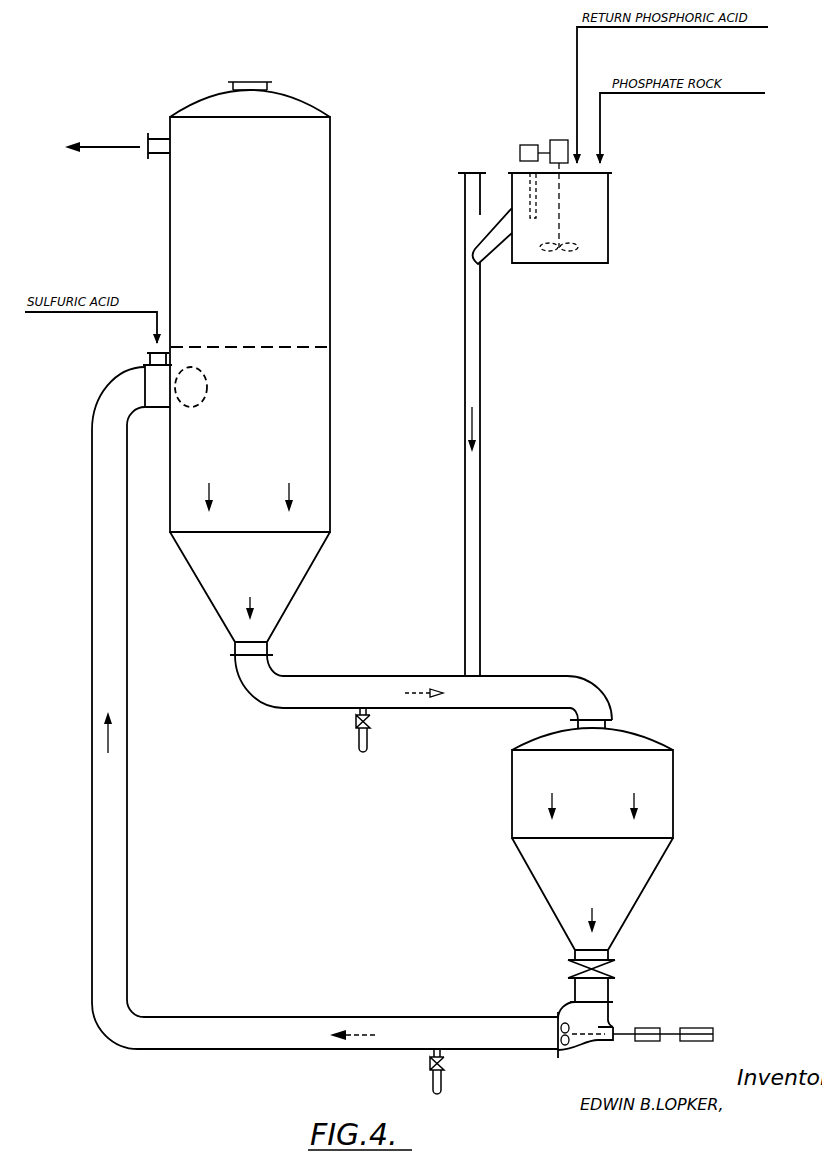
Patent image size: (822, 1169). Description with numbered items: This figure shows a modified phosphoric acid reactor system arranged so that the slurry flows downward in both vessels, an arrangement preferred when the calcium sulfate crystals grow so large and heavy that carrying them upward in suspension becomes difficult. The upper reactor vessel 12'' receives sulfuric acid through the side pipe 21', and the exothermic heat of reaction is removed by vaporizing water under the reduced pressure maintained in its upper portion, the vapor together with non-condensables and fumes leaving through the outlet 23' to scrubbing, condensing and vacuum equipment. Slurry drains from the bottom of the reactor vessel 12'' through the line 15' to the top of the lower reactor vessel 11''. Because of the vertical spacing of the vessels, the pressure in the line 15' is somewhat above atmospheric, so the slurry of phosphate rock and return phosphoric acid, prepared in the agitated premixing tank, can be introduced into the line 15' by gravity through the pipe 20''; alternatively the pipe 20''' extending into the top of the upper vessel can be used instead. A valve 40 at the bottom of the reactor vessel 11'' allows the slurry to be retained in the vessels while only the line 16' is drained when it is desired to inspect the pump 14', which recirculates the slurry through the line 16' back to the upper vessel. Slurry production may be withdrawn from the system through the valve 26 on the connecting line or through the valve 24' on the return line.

The pipe 20''' is at (283, 72).
The outlet 23' is at (117, 163).
The pipe 21' is at (131, 367).
The reactor vessel 12'' is at (283, 368).
The pipe 20'' is at (492, 424).
The line 15' is at (423, 684).
The valve 26 is at (374, 728).
The reactor vessel 11'' is at (622, 844).
The valve 40 is at (612, 967).
The pump 14' is at (635, 1018).
The line 16' is at (325, 712).
The valve 24' is at (459, 1073).